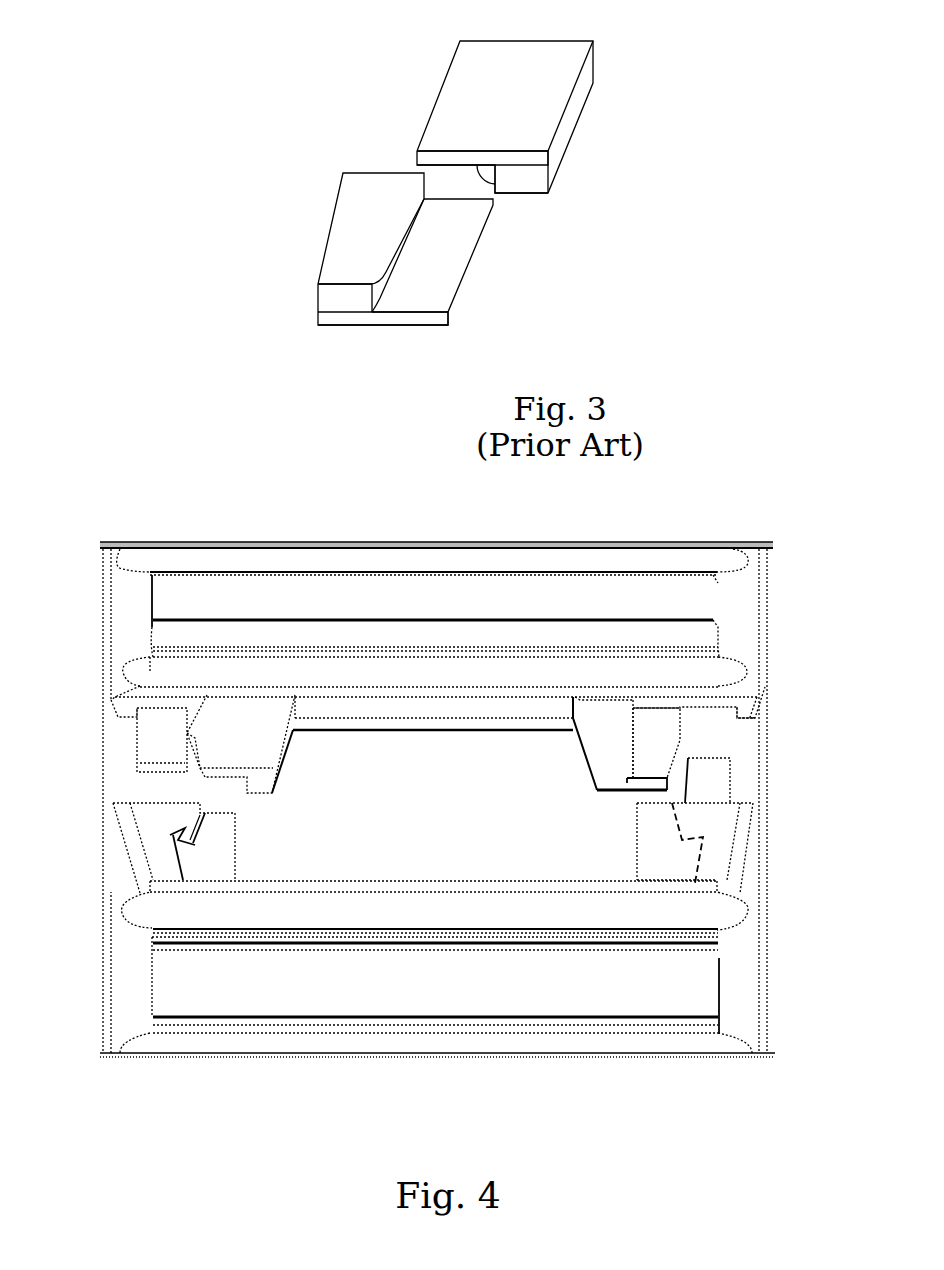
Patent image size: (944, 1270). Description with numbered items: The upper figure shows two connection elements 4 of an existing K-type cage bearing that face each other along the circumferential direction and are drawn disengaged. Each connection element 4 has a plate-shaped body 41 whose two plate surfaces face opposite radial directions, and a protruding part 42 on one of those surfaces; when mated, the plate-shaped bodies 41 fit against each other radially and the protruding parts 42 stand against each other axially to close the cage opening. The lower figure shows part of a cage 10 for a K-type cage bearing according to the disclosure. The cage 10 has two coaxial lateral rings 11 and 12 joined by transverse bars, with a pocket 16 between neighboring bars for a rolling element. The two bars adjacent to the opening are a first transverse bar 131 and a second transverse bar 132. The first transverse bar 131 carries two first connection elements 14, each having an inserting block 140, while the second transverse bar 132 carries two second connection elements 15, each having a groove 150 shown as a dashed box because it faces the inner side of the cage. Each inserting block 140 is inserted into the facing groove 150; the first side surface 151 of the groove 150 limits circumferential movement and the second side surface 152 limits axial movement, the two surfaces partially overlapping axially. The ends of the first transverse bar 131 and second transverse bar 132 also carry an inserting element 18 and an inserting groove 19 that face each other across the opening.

In FIG. 3, the connection element 4 is at (607, 140).
In FIG. 3, the plate-shaped body 41 is at (547, 162).
In FIG. 3, the protruding part 42 is at (548, 188).
In FIG. 4, the cage 10 is at (140, 531).
In FIG. 4, the lateral ring 11 is at (757, 575).
In FIG. 4, the lateral ring 12 is at (118, 598).
In FIG. 4, the first transverse bar 131 is at (138, 673).
In FIG. 4, the second transverse bar 132 is at (733, 913).
In FIG. 4, the first connection element 14 is at (277, 768).
In FIG. 4, the inserting block 140 is at (195, 738).
In FIG. 4, the second connection element 15 is at (140, 813).
In FIG. 4, the groove 150 is at (172, 837).
In FIG. 4, the first side surface 151 is at (170, 843).
In FIG. 4, the second side surface 152 is at (183, 862).
In FIG. 4, the pocket 16 is at (690, 608).
In FIG. 4, the inserting element 18 is at (140, 722).
In FIG. 4, the inserting groove 19 is at (725, 715).